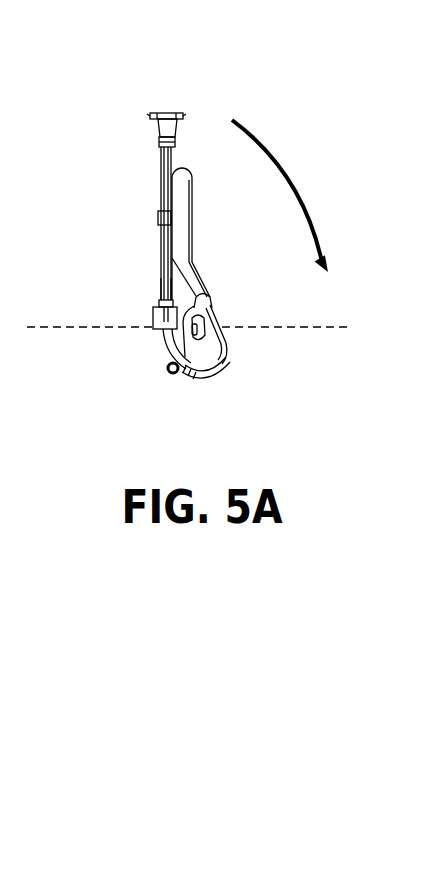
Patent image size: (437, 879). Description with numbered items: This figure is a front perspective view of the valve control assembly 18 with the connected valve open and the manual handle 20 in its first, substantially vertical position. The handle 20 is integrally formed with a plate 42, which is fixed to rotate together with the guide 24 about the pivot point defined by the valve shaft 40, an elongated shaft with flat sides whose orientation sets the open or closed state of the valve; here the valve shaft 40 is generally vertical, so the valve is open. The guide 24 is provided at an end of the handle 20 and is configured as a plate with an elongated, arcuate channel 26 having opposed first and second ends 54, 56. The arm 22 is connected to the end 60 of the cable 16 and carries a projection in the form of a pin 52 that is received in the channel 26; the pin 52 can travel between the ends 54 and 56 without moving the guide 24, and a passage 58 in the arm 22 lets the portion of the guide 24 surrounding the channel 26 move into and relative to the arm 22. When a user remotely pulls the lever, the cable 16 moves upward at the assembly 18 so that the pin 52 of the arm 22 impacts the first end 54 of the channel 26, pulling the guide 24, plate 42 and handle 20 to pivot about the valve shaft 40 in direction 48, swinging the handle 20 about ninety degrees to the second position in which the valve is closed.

The cable 16 is at (150, 165).
The valve control assembly 18 is at (210, 112).
The handle 20 is at (179, 218).
The arm 22 is at (148, 341).
The guide 24 is at (226, 356).
The channel 26 is at (211, 386).
The valve shaft 40 is at (200, 331).
The plate 42 is at (219, 304).
The pivot direction 48 is at (266, 157).
The projection 52 is at (171, 376).
The first end 54 is at (188, 372).
The second end 56 is at (210, 368).
The passage 58 is at (156, 322).
The end 60 is at (162, 288).